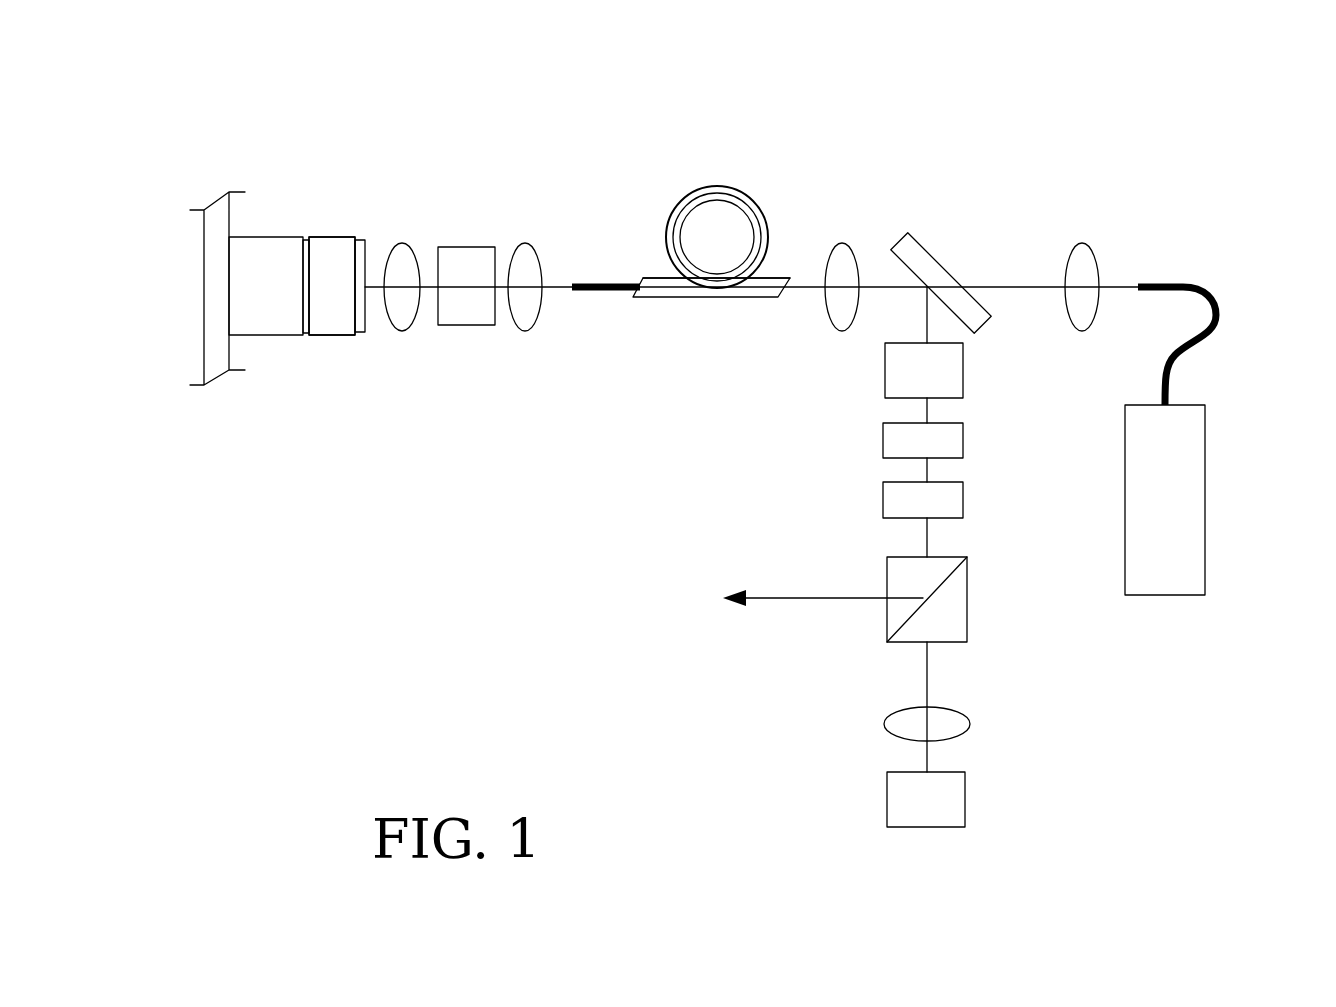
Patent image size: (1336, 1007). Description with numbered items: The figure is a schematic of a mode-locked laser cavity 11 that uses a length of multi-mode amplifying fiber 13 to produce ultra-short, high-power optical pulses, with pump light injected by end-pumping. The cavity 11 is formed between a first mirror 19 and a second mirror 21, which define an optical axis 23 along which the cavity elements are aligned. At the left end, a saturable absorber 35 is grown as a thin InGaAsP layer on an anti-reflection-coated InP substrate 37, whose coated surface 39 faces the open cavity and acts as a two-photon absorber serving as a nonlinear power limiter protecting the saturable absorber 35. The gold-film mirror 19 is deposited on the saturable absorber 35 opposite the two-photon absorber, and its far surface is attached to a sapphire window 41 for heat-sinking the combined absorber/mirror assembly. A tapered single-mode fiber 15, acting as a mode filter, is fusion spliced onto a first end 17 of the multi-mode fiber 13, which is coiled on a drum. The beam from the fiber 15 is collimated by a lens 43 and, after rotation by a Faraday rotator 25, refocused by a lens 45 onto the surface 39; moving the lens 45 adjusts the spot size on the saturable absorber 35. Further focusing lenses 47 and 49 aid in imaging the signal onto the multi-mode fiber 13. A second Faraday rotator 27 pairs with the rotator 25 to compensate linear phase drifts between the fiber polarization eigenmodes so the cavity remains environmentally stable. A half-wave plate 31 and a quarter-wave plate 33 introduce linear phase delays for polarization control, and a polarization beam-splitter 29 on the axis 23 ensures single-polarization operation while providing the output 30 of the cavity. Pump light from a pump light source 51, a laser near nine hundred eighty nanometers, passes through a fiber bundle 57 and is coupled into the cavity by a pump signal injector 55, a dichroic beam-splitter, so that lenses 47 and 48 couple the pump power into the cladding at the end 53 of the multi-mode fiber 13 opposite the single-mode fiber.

The mode-locked laser cavity 11 is at (810, 124).
The multi-mode amplifying fiber 13 is at (763, 217).
The single-mode fiber 15 is at (593, 291).
The first end of the multi-mode fiber 17 is at (643, 279).
The first mirror 19 is at (277, 336).
The second mirror 21 is at (965, 803).
The optical axis 23 is at (553, 283).
The Faraday rotator 25 is at (462, 247).
The Faraday rotator 27 is at (963, 368).
The polarization beam-splitter 29 is at (967, 590).
The output 30 is at (768, 598).
The half-wave plate 31 is at (963, 496).
The quarter-wave plate 33 is at (963, 438).
The saturable absorber 35 is at (307, 238).
The InP substrate (two-photon absorber) 37 is at (327, 338).
The anti-reflection-coated surface (two-photon absorber) 39 is at (365, 240).
The sapphire window 41 is at (230, 222).
The lens 43 is at (525, 331).
The lens 45 is at (400, 331).
The focusing lens 47 is at (843, 247).
The lens 48 is at (1083, 248).
The focusing lens 49 is at (970, 723).
The pump light source 51 is at (1205, 517).
The end of the multi-mode fiber 53 is at (783, 299).
The pump signal injector 55 is at (927, 251).
The fiber bundle 57 is at (1203, 296).